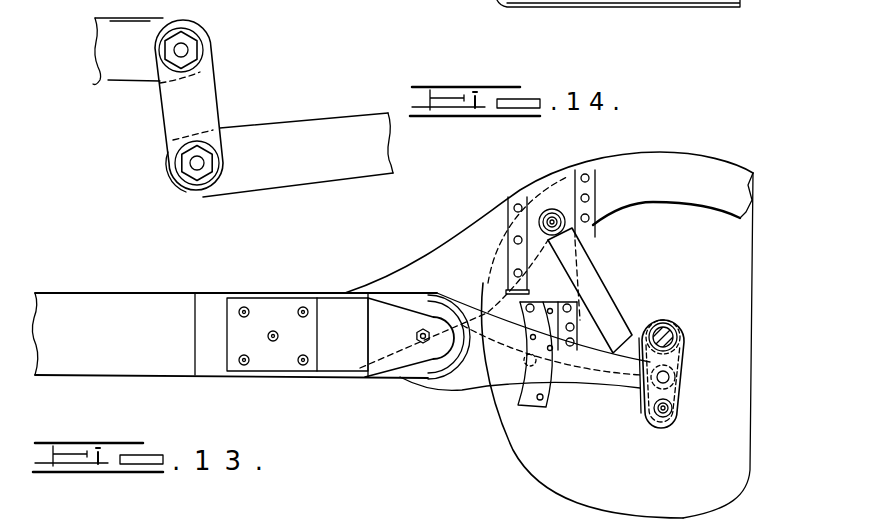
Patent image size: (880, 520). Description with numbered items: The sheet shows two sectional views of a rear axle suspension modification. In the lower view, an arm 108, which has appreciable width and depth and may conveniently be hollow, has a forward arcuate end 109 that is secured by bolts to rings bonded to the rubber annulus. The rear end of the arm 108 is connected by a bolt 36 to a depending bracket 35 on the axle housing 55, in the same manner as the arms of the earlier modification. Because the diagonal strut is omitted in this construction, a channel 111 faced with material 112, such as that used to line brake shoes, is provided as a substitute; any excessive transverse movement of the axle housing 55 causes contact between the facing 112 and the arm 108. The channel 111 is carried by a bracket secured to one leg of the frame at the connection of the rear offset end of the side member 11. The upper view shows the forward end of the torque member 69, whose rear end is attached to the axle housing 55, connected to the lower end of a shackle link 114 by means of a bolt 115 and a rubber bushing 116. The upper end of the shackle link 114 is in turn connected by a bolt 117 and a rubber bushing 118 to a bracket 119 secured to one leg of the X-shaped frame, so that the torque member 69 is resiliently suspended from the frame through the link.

In FIG. 13, the side member 11 is at (107, 300).
In FIG. 13, the forward arcuate end 109 is at (450, 297).
In FIG. 13, the arm 108 is at (472, 370).
In FIG. 13, the channel 111 is at (518, 400).
In FIG. 13, the facing material 112 is at (546, 407).
In FIG. 13, the axle housing 55 is at (653, 315).
In FIG. 13, the depending bracket 35 is at (693, 352).
In FIG. 13, the bolt 36 is at (670, 378).
In FIG. 14, the bracket 119 is at (101, 70).
In FIG. 14, the shackle link 114 is at (202, 97).
In FIG. 14, the bolt 117 is at (188, 50).
In FIG. 14, the rubber bushing 118 is at (178, 63).
In FIG. 14, the rubber bushing 116 is at (180, 173).
In FIG. 14, the bolt 115 is at (197, 172).
In FIG. 14, the torque member 69 is at (323, 173).